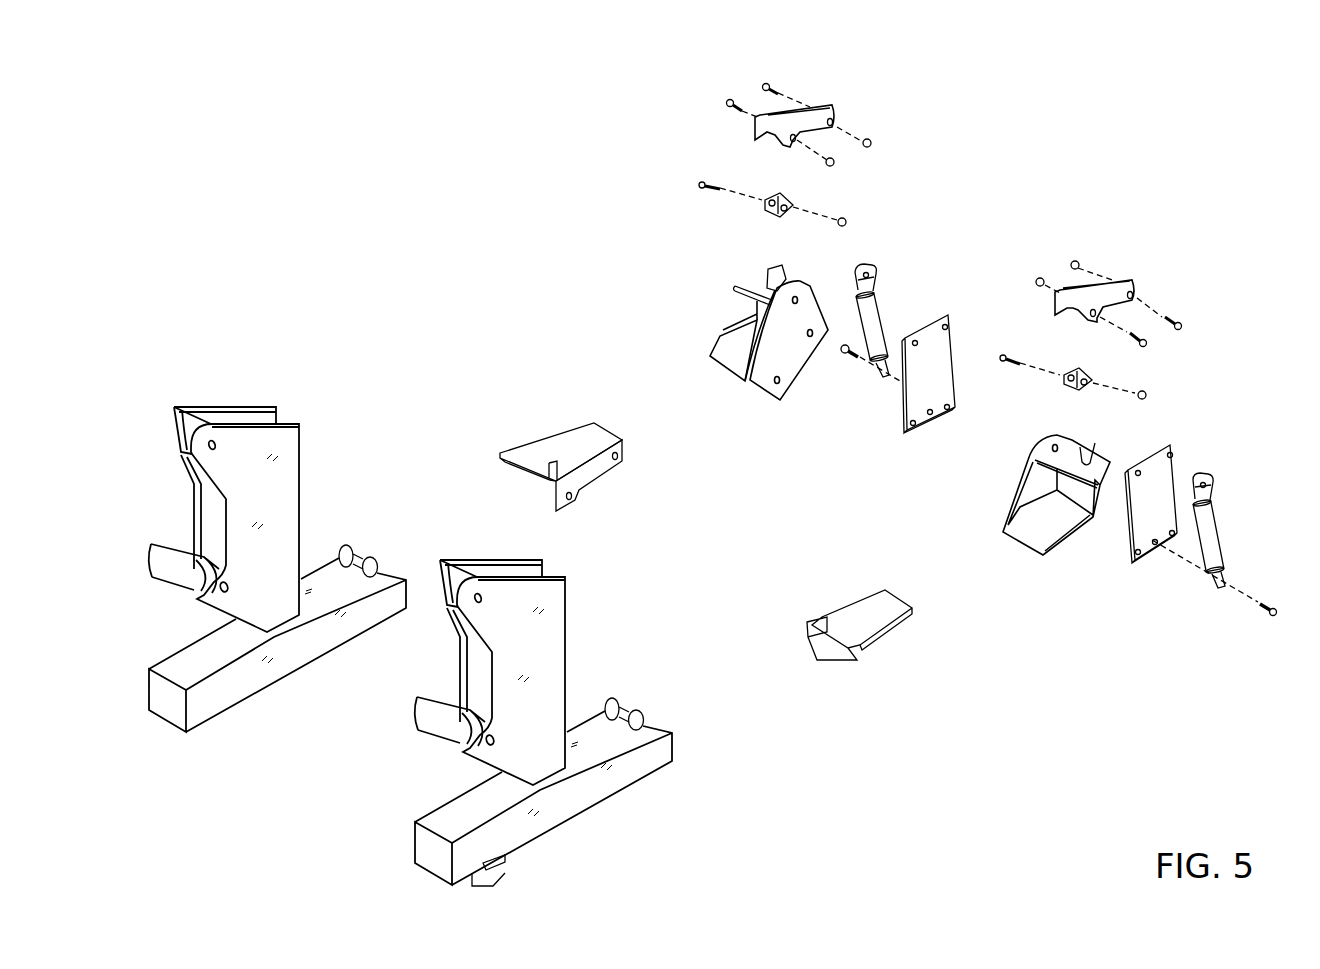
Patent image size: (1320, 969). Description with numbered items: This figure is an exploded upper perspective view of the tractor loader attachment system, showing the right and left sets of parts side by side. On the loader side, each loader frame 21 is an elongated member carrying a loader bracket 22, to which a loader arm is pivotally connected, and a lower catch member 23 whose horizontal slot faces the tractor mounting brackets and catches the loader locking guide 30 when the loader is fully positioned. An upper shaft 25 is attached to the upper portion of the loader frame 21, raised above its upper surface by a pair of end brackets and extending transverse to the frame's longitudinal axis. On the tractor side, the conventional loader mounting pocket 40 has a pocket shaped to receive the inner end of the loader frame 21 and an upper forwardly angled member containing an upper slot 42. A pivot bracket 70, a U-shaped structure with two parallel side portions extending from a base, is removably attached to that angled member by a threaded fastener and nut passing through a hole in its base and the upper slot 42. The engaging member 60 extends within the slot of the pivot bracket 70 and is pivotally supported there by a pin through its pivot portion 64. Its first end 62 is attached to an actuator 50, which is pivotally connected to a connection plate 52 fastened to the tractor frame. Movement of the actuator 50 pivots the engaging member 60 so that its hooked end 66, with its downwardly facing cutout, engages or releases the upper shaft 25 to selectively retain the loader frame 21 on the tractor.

The loader frame 21 is at (227, 687).
The loader bracket 22 is at (242, 447).
The lower catch member 23 is at (495, 882).
The upper shaft 25 is at (361, 553).
The loader locking guide 30 is at (601, 475).
The loader mounting pocket 40 is at (722, 335).
The upper slot 42 is at (762, 282).
The actuator 50 is at (890, 317).
The connection plate 52 is at (900, 407).
The engaging member 60 is at (823, 105).
The first end 62 is at (838, 110).
The pivot portion 64 is at (795, 147).
The hooked end 66 is at (753, 137).
The pivot bracket 70 is at (767, 207).